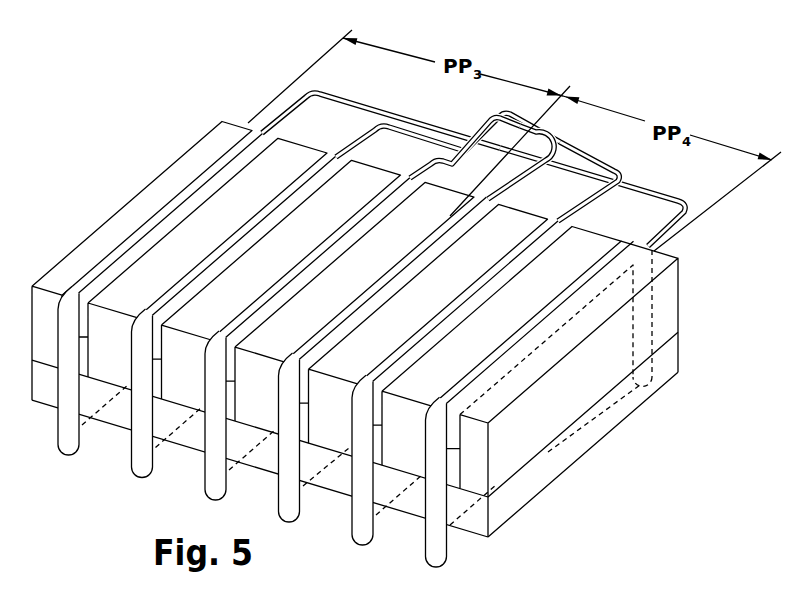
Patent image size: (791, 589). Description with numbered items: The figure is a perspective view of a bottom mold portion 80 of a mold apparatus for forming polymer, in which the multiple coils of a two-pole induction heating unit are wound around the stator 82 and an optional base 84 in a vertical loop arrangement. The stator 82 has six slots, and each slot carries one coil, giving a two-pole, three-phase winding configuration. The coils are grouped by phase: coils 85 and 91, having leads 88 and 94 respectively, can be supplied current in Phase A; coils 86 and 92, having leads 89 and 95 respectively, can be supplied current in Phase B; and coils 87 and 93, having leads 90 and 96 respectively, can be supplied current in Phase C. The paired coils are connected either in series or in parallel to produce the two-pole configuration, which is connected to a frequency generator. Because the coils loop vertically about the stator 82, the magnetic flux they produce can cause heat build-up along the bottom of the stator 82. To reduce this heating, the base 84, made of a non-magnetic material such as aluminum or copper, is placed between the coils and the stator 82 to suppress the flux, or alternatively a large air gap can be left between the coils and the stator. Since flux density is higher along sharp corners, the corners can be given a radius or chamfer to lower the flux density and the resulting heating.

The bottom mold portion 80 is at (694, 84).
The stator 82 is at (112, 217).
The base 84 is at (49, 382).
The coil 85 is at (80, 447).
The coil 86 is at (154, 468).
The coil 87 is at (226, 490).
The lead 88 is at (347, 101).
The lead 89 is at (409, 131).
The lead 90 is at (462, 150).
The coil 91 is at (290, 505).
The coil 92 is at (372, 531).
The coil 93 is at (440, 553).
The lead 94 is at (550, 160).
The lead 95 is at (606, 172).
The lead 96 is at (644, 190).